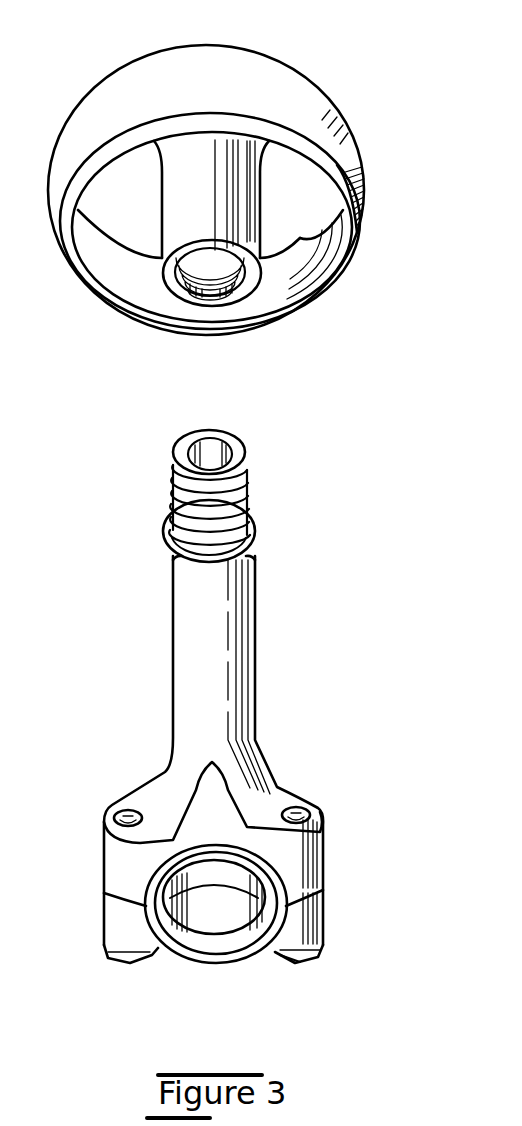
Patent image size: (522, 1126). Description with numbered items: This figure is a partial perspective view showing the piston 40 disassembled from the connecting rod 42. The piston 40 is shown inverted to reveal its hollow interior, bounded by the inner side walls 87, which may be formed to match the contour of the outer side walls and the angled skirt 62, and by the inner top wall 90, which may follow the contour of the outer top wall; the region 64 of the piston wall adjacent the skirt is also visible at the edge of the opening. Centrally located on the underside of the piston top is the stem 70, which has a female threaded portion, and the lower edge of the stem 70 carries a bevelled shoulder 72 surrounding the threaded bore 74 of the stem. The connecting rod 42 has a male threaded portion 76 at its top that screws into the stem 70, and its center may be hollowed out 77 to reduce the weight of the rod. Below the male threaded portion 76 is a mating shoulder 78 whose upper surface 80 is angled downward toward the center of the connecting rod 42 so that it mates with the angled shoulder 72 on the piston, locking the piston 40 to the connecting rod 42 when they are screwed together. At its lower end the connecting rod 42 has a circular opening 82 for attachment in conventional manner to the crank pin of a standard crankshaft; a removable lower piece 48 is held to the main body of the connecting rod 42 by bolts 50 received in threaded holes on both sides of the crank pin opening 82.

The piston 40 is at (157, 62).
The connecting rod 42 is at (182, 628).
The removable lower piece 48 is at (324, 917).
The bolts 50 is at (313, 956).
The angled skirt 62 is at (359, 232).
The cap wall section 64 is at (362, 148).
The stem 70 is at (172, 190).
The bevelled shoulder 72 is at (252, 282).
The threaded bore 74 is at (188, 293).
The male threaded portion 76 is at (238, 480).
The hollowed out center 77 is at (214, 443).
The shoulder 78 is at (188, 552).
The upper surface of shoulder 80 is at (248, 516).
The circular opening 82 is at (223, 920).
The inner side walls 87 is at (308, 240).
The inner top wall 90 is at (124, 232).